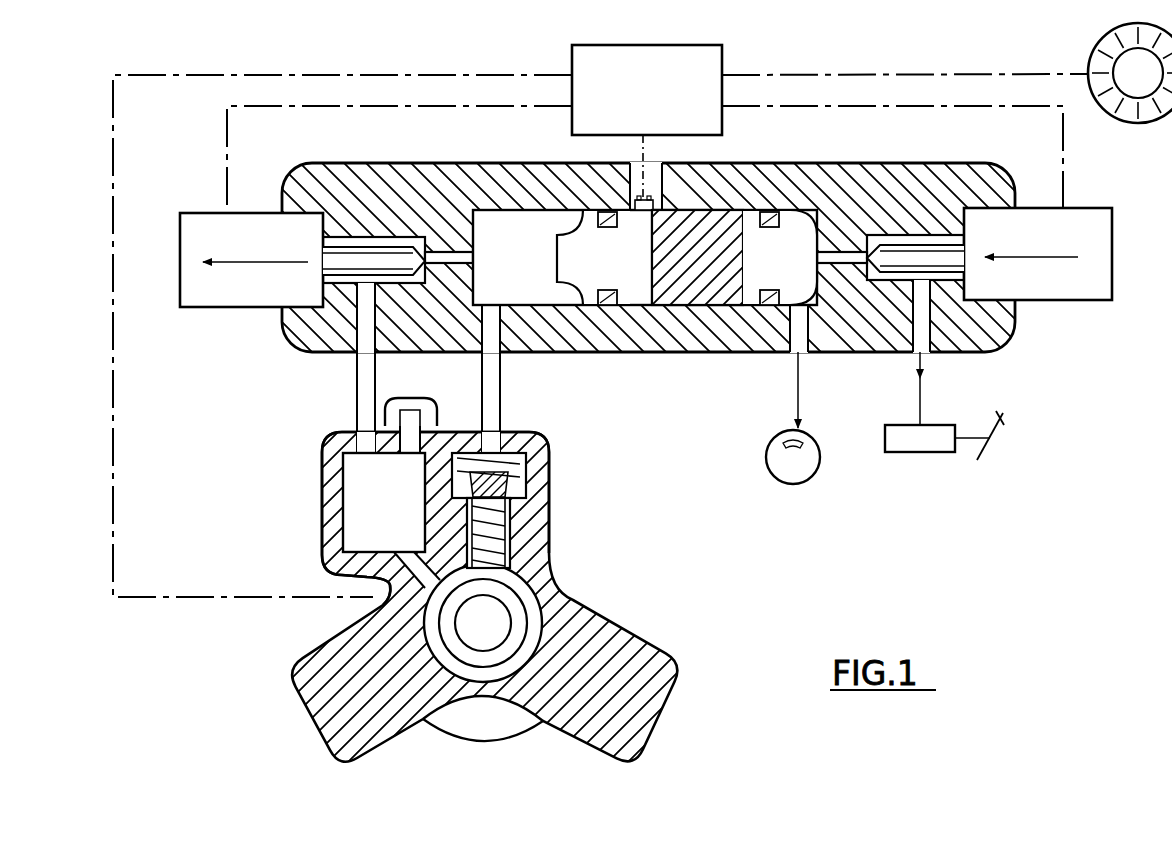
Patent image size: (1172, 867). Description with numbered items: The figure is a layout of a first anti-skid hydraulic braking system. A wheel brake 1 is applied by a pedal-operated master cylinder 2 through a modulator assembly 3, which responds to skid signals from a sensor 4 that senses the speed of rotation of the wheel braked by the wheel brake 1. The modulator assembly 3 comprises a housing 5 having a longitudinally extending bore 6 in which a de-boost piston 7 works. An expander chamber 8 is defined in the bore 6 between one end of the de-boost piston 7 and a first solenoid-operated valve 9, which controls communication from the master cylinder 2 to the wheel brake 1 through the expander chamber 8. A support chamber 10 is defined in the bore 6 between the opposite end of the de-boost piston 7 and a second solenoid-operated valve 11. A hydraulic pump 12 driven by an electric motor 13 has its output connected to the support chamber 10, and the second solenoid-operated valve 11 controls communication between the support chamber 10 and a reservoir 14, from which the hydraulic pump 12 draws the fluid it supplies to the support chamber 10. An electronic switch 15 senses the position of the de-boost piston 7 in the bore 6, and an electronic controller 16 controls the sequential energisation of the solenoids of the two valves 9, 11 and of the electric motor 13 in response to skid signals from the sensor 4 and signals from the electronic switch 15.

The wheel brake 1 is at (805, 472).
The master cylinder 2 is at (937, 441).
The modulator assembly 3 is at (624, 276).
The sensor 4 is at (1128, 108).
The housing 5 is at (868, 186).
The bore 6 is at (781, 212).
The de-boost piston 7 is at (685, 292).
The expander chamber 8 is at (818, 338).
The first solenoid-operated valve 9 is at (1073, 284).
The support chamber 10 is at (488, 232).
The second solenoid-operated valve 11 is at (238, 285).
The hydraulic pump 12 is at (549, 592).
The electric motor 13 is at (374, 603).
The reservoir 14 is at (372, 495).
The electronic switch 15 is at (643, 198).
The electronic controller 16 is at (683, 68).